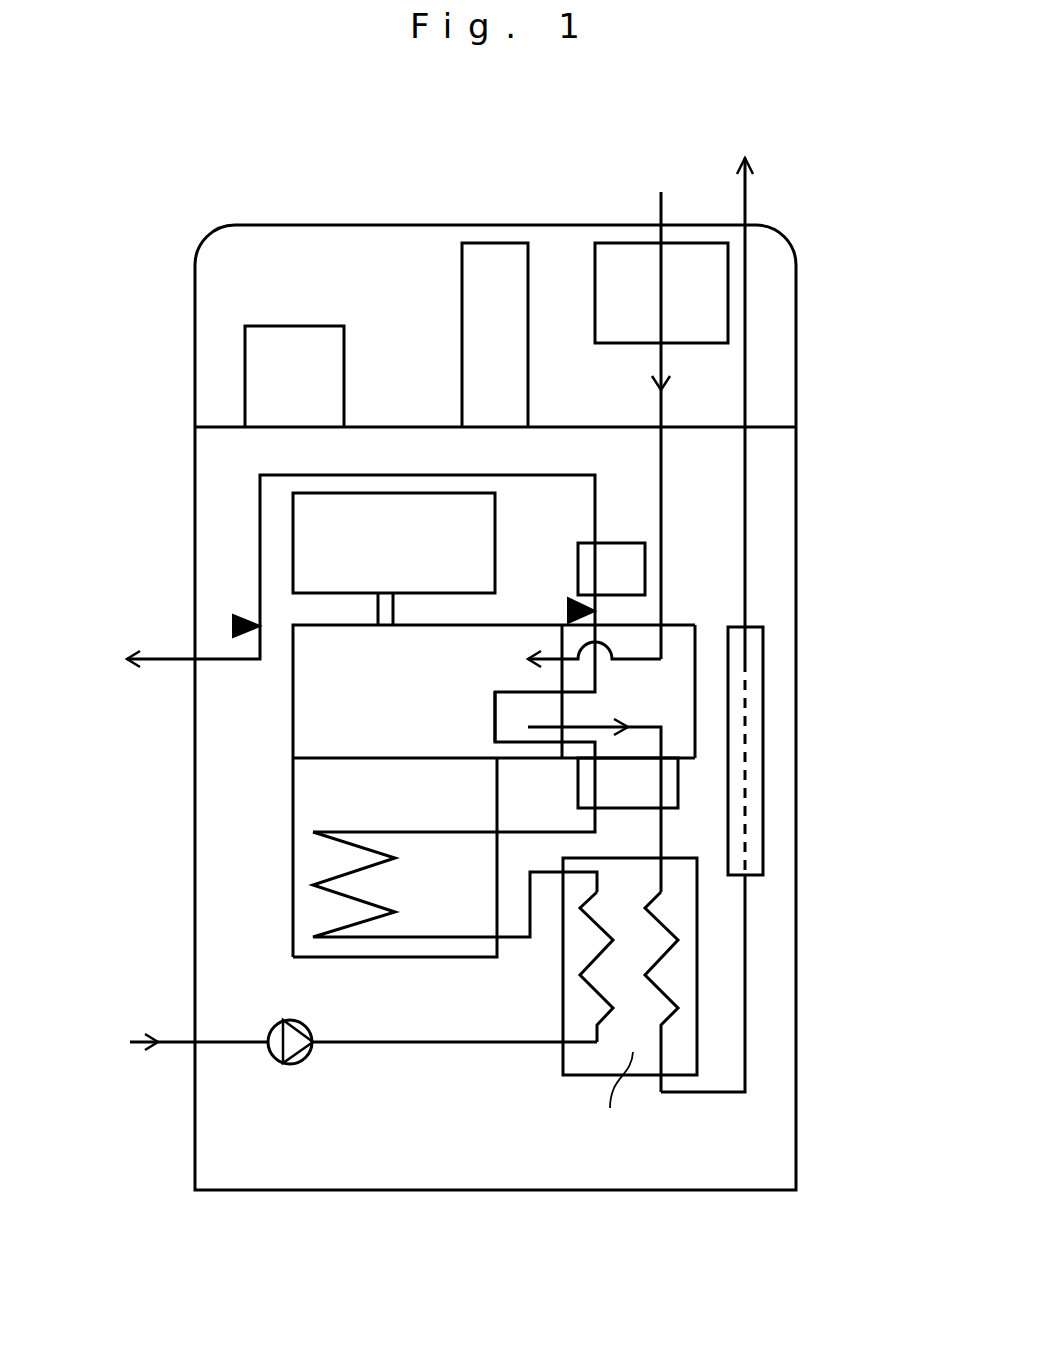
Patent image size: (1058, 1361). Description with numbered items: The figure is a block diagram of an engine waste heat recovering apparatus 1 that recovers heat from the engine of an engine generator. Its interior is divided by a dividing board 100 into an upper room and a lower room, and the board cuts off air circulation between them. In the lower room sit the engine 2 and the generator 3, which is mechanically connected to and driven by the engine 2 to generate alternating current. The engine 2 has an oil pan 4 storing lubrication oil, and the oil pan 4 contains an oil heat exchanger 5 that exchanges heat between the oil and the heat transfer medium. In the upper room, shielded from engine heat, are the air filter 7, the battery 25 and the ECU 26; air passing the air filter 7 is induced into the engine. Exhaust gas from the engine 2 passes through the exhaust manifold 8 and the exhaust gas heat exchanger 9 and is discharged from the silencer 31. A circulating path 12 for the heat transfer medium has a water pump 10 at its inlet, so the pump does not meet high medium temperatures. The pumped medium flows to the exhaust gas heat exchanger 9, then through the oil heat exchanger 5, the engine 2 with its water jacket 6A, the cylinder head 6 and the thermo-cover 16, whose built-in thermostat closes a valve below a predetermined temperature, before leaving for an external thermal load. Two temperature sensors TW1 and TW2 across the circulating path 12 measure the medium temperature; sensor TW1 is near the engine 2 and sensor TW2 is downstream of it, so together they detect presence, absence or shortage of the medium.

The engine waste heat recovering apparatus 1 is at (180, 360).
The dividing board 100 is at (373, 427).
The battery 25 is at (300, 344).
The ECU (engine control unit) 26 is at (470, 294).
The air filter 7 is at (612, 344).
The silencer 31 is at (763, 693).
The generator 3 is at (495, 527).
The engine 2 is at (295, 725).
The oil pan 4 is at (295, 808).
The oil heat exchanger (oil cooler) 5 is at (365, 938).
The cylinder head 6 is at (688, 625).
The water jacket 6A is at (547, 745).
The thermo-cover 16 is at (628, 543).
The exhaust manifold 8 is at (678, 796).
The exhaust gas heat exchanger 9 is at (680, 858).
The water pump 10 is at (295, 1063).
The circulating path 12 is at (395, 1043).
The temperature sensor TW1 is at (575, 600).
The temperature sensor TW2 is at (245, 612).